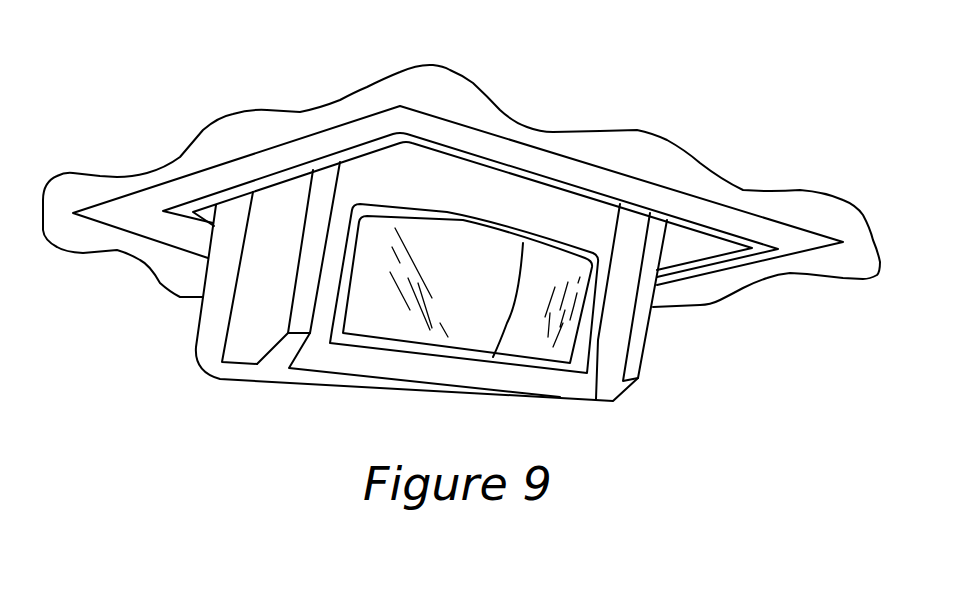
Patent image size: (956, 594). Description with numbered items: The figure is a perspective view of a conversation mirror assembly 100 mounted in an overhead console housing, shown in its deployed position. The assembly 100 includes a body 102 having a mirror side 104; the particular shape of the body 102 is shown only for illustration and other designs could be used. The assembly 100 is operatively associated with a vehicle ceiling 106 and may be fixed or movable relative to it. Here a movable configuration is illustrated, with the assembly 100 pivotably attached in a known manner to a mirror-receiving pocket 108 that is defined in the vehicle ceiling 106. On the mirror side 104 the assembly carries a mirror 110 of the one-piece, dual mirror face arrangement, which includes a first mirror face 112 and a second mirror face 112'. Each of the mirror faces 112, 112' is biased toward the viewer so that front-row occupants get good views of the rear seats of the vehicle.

The conversation mirror assembly 100 is at (179, 315).
The body 102 is at (560, 390).
The mirror side 104 is at (320, 360).
The vehicle ceiling 106 is at (140, 203).
The mirror-receiving pocket 108 is at (703, 248).
The mirror 110 is at (430, 240).
The first mirror face 112 is at (512, 196).
The second mirror face 112' is at (586, 199).